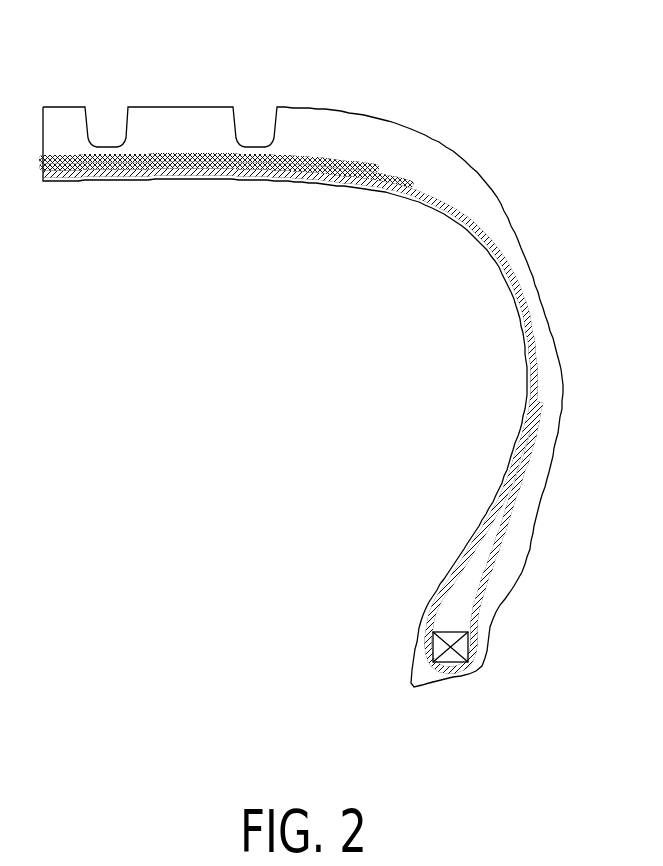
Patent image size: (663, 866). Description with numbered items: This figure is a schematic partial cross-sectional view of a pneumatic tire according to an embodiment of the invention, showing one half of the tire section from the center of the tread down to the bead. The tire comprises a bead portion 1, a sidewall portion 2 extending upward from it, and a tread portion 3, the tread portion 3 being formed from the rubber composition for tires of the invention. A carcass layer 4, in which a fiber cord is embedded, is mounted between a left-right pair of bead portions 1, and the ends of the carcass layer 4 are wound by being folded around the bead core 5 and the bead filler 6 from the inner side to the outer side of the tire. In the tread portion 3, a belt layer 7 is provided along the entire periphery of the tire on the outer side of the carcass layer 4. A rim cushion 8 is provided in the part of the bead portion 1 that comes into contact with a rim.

The bead portion 1 is at (503, 665).
The sidewall portion 2 is at (574, 384).
The tread portion 3 is at (160, 87).
The carcass layer 4 is at (525, 297).
The bead core 5 is at (418, 653).
The bead filler 6 is at (465, 590).
The belt layer 7 is at (393, 178).
The rim cushion 8 is at (447, 672).